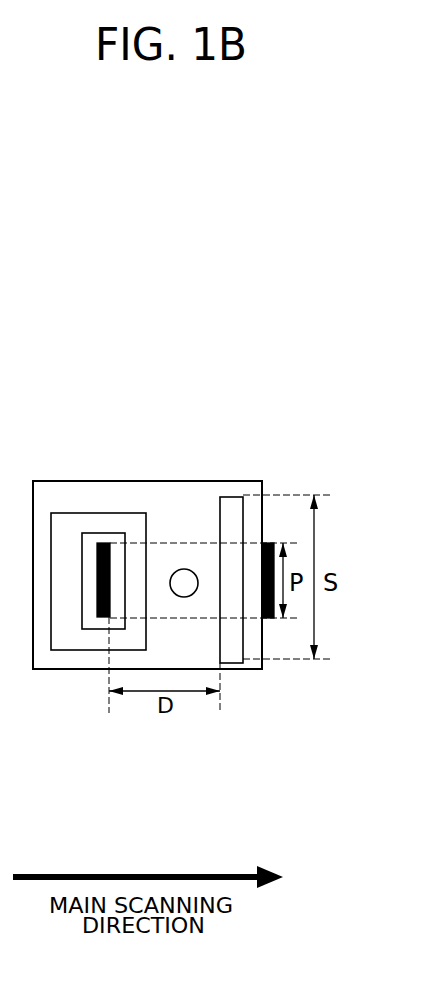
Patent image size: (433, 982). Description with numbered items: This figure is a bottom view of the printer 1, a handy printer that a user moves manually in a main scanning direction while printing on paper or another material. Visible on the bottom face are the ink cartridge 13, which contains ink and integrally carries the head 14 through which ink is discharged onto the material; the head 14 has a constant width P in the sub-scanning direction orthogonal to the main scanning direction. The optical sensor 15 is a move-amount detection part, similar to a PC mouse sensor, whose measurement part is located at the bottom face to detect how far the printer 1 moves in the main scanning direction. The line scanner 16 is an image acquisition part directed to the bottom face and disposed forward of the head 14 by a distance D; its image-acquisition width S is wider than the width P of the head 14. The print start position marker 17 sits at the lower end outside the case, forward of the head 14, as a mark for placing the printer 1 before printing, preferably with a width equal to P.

The printer 1 is at (62, 377).
The ink cartridge 13 is at (103, 522).
The head 14 is at (105, 618).
The optical sensor 15 is at (185, 571).
The line scanner 16 is at (233, 503).
The print start position marker 17 is at (266, 620).